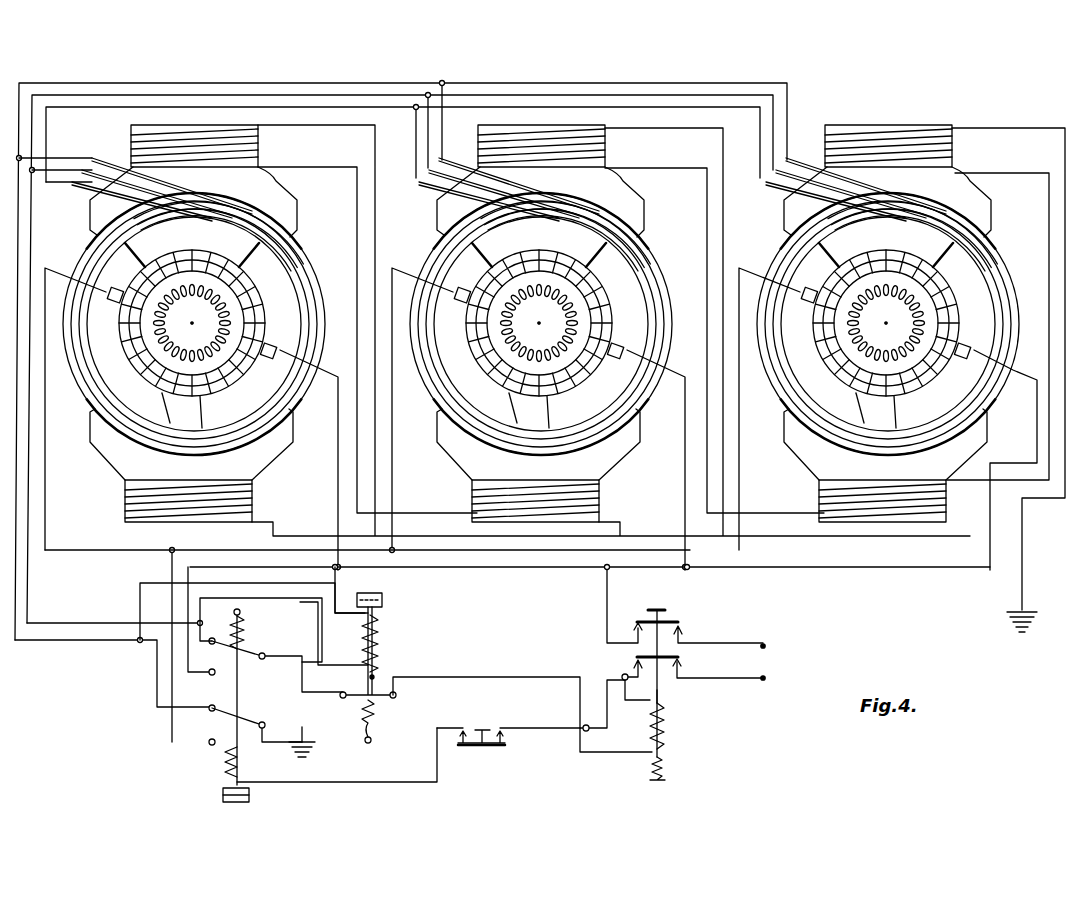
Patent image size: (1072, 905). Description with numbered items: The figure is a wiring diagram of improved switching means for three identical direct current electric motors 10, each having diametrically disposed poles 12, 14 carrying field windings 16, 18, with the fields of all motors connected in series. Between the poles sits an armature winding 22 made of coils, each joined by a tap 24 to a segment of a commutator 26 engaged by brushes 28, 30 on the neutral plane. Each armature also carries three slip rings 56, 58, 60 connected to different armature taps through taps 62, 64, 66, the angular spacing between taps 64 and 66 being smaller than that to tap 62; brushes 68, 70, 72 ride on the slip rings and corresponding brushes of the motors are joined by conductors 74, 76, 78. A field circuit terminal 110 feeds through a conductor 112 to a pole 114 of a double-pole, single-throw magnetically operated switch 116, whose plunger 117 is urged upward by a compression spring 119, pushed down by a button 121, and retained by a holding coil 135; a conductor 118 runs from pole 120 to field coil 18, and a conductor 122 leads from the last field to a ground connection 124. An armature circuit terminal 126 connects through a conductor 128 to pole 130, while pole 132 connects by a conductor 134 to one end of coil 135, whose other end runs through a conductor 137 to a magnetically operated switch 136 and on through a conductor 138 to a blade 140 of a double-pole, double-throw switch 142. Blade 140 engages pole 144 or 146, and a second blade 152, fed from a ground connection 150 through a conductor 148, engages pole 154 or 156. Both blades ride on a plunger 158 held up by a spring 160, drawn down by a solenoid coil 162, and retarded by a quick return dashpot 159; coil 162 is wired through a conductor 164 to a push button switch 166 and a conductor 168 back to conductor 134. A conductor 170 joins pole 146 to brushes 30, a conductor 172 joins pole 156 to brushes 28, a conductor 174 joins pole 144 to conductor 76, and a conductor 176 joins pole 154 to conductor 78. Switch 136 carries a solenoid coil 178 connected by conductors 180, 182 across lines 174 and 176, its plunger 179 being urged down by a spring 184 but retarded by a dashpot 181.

The direct current electric motor 10 is at (331, 229).
The pole 12 is at (287, 200).
The pole 14 is at (284, 451).
The field winding 16 is at (269, 163).
The field winding 18 is at (170, 477).
The armature winding 22 is at (209, 337).
The tap 24 is at (162, 262).
The commutator 26 is at (162, 400).
The brush 28 is at (102, 300).
The brush 30 is at (272, 341).
The slip ring 56 is at (258, 250).
The slip ring 58 is at (306, 287).
The slip ring 60 is at (315, 258).
The tap 62 is at (208, 402).
The tap 64 is at (234, 253).
The tap 66 is at (134, 252).
The brush 68 is at (88, 195).
The brush 70 is at (100, 162).
The brush 72 is at (172, 185).
The conductor 74 is at (68, 118).
The conductor 76 is at (126, 95).
The conductor 78 is at (202, 83).
The field circuit terminal 110 is at (764, 650).
The conductor 112 is at (742, 647).
The pole 114 is at (680, 631).
The magnetically operated switch 116 is at (672, 615).
The plunger 117 is at (662, 695).
The conductor 118 is at (585, 590).
The compression spring 119 is at (654, 783).
The pole 120 is at (632, 629).
The button 121 is at (658, 608).
The conductor 122 is at (986, 128).
The ground connection 124 is at (1008, 608).
The armature circuit terminal 126 is at (764, 679).
The conductor 128 is at (729, 683).
The pole 130 is at (683, 664).
The pole 132 is at (626, 674).
The conductor 134 is at (638, 703).
The holding coil 135 is at (668, 739).
The magnetically operated switch 136 is at (384, 702).
The conductor 137 is at (475, 678).
The conductor 138 is at (289, 662).
The blade 140 is at (260, 651).
The magnetically operated switch 142 is at (216, 754).
The pole 144 is at (220, 638).
The pole 146 is at (222, 662).
The conductor 148 is at (304, 730).
The ground connection 150 is at (312, 748).
The blade 152 is at (267, 720).
The pole 154 is at (216, 704).
The pole 156 is at (216, 739).
The plunger 158 is at (241, 697).
The dashpot 159 is at (220, 799).
The spring 160 is at (250, 627).
The solenoid coil 162 is at (246, 765).
The conductor 164 is at (377, 786).
The push button switch 166 is at (472, 725).
The conductor 168 is at (515, 739).
The conductor 170 is at (324, 493).
The conductor 172 is at (46, 492).
The conductor 174 is at (46, 624).
The conductor 176 is at (42, 654).
The solenoid coil 178 is at (390, 634).
The plunger 179 is at (377, 674).
The conductor 180 is at (330, 629).
The dashpot 181 is at (382, 601).
The conductor 182 is at (338, 594).
The spring 184 is at (372, 742).